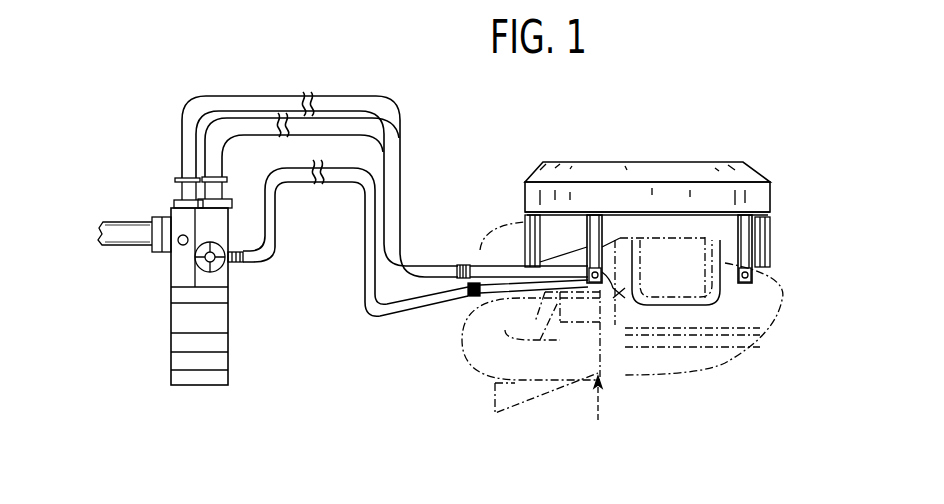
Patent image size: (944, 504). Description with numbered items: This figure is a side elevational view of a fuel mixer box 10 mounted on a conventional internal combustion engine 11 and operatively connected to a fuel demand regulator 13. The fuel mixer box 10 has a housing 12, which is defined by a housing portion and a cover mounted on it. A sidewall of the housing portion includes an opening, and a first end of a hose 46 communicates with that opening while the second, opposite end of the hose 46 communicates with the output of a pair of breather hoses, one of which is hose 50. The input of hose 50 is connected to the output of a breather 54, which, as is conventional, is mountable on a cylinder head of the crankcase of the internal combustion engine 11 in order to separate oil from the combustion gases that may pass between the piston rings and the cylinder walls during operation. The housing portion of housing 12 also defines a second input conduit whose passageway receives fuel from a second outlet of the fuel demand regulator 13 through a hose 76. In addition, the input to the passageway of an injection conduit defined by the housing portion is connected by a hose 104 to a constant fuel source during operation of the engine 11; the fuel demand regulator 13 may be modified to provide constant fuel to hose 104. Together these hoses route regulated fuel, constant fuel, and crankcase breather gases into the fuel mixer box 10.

The fuel mixer box 10 is at (760, 166).
The internal combustion engine 11 is at (602, 414).
The housing 12 is at (771, 235).
The fuel demand regulator 13 is at (230, 338).
The hose 46 is at (480, 250).
The hose 50 is at (472, 347).
The breather 54 is at (675, 290).
The hose 76 is at (473, 267).
The hose 104 is at (493, 290).